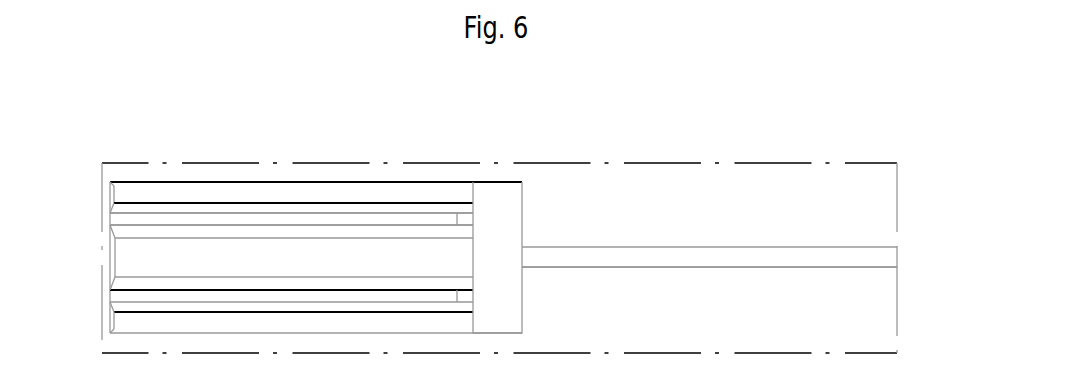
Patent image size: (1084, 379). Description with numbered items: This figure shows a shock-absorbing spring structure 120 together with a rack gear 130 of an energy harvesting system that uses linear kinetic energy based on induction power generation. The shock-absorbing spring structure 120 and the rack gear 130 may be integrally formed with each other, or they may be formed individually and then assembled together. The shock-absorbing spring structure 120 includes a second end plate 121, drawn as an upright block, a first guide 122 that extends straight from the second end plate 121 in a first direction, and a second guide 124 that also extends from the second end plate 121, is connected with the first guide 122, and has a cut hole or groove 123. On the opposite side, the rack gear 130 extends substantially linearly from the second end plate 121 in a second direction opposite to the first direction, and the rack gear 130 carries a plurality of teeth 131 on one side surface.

The shock-absorbing spring structure 120 is at (481, 175).
The second end plate 121 is at (507, 213).
The first guide 122 is at (333, 191).
The cut hole 123 is at (249, 219).
The second guide 124 is at (177, 208).
The rack gear 130 is at (699, 215).
The teeth 131 is at (663, 264).